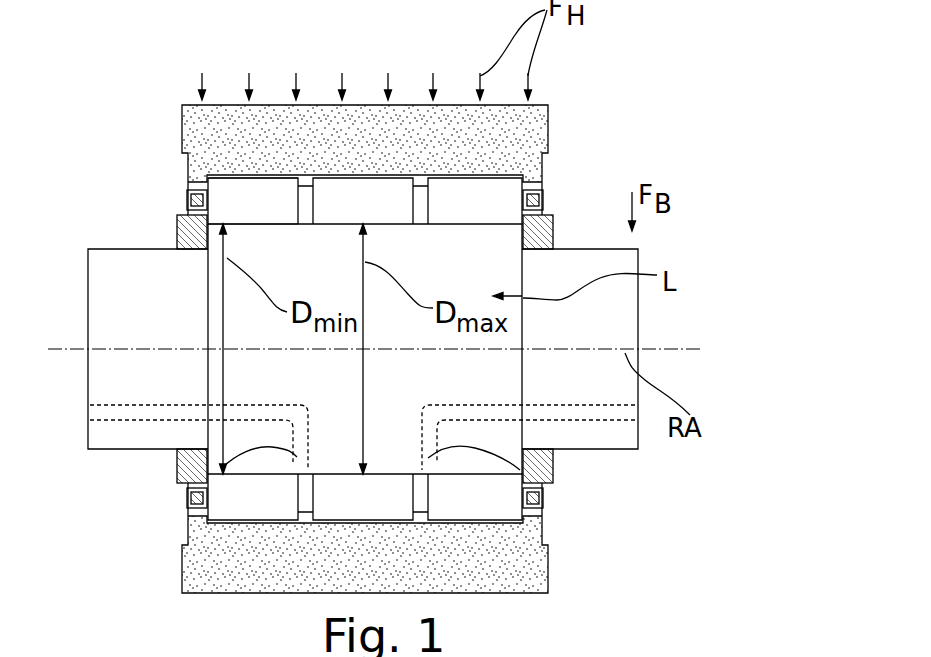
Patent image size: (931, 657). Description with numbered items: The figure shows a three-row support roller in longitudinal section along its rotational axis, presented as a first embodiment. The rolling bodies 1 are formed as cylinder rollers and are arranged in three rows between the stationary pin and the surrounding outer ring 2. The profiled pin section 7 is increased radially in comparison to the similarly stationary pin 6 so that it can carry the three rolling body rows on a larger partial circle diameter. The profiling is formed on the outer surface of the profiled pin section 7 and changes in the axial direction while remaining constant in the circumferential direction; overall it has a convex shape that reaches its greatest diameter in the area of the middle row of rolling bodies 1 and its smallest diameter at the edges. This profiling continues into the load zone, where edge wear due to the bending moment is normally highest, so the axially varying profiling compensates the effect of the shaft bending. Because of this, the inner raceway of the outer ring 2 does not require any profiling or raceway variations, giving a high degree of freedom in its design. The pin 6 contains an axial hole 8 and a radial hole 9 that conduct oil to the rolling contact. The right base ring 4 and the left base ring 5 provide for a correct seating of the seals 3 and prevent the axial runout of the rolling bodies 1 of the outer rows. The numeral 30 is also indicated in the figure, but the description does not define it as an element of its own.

The rolling body 1 is at (365, 203).
The outer ring 2 is at (548, 118).
The rolling bearing cage 3 is at (546, 193).
The right base ring 4 is at (552, 232).
The left base ring 5 is at (178, 233).
The pin 6 is at (625, 303).
The profiled pin section 7 is at (240, 303).
The axial hole for lubricant line 8 is at (117, 417).
The radial hole for lubricant line 9 is at (178, 474).
The contact zone 30 is at (262, 223).